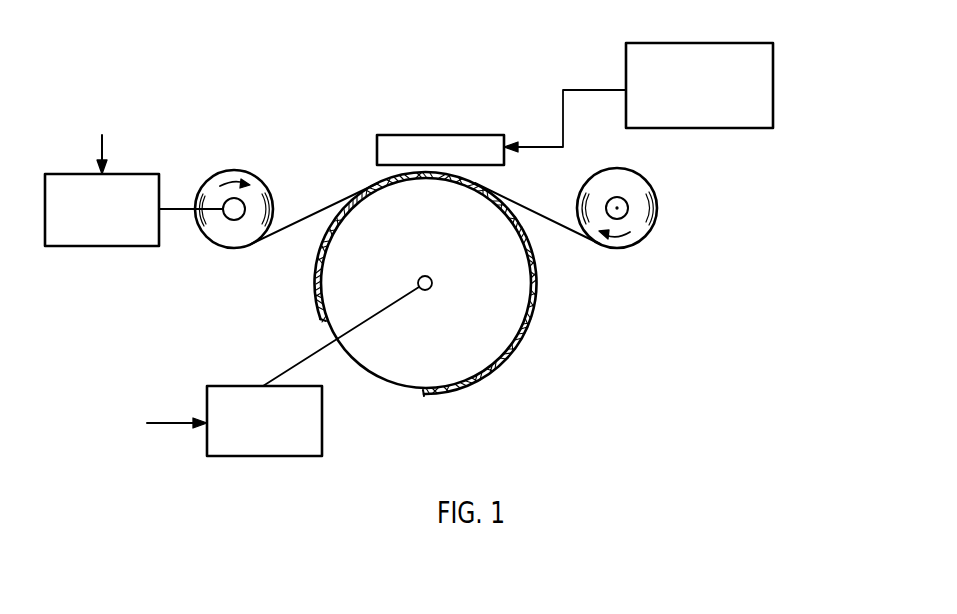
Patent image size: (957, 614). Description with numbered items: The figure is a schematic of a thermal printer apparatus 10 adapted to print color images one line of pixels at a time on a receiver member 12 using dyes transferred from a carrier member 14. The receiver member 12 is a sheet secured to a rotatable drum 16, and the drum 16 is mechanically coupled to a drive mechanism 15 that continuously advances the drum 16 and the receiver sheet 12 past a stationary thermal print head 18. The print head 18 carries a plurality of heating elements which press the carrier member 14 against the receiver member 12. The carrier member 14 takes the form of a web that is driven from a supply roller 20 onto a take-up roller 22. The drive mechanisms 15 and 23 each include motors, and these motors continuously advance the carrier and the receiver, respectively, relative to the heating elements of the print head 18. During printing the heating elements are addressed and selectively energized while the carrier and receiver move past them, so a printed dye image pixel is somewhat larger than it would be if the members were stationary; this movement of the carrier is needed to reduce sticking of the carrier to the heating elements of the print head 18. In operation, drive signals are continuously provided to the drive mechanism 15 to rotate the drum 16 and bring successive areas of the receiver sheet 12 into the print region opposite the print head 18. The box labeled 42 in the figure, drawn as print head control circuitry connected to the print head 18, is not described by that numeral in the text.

The thermal printer apparatus 10 is at (248, 306).
The receiver member 12 is at (452, 397).
The carrier member 14 is at (310, 216).
The drive mechanism 15 is at (270, 456).
The rotatable drum 16 is at (434, 339).
The thermal print head 18 is at (427, 135).
The supply roller 20 is at (657, 208).
The take-up roller 22 is at (259, 177).
The drive mechanism 23 is at (120, 246).
The print head control circuitry 42 is at (693, 43).